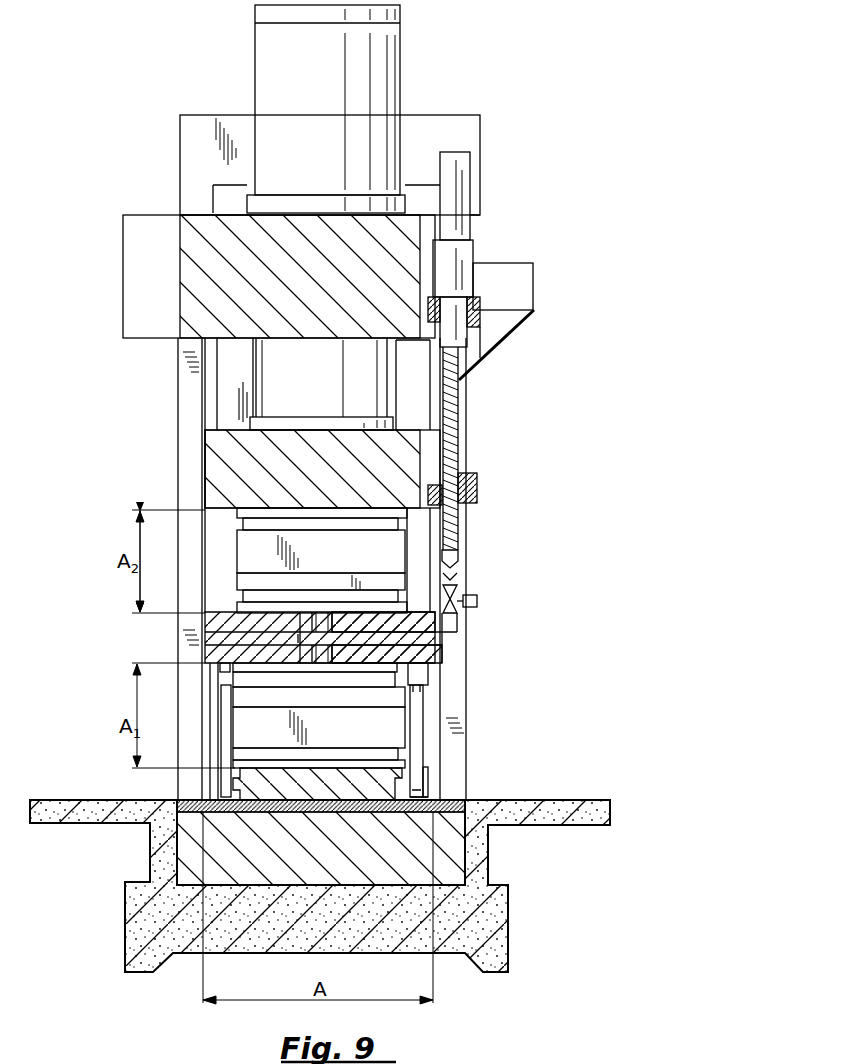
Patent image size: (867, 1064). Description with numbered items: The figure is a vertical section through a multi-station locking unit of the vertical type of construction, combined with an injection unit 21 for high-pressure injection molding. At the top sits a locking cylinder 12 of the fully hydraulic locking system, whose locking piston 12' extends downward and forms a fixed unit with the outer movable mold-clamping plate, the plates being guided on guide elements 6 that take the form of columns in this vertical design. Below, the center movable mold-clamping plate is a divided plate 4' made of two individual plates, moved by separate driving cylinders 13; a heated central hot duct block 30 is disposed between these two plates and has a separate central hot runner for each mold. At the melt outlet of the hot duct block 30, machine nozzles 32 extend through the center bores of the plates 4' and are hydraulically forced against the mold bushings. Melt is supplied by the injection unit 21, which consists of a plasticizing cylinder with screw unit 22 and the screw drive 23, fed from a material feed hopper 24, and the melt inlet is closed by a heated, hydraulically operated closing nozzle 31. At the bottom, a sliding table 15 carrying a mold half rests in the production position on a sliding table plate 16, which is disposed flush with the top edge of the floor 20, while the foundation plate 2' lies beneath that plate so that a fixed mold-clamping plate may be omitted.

The locking cylinder 12 is at (304, 100).
The locking piston 12' is at (307, 384).
The guide element 6 is at (243, 398).
The screw drive 23 is at (455, 165).
The injection unit 21 is at (460, 250).
The material feed hopper 24 is at (502, 327).
The screw unit 22 is at (460, 392).
The closing nozzle 31 is at (477, 598).
The central hot duct block 30 is at (453, 628).
The divided mold-clamping plate 4' is at (288, 637).
The machine nozzle 32 is at (323, 658).
The driving cylinder 13 is at (417, 700).
The sliding table 15 is at (367, 783).
The sliding table plate 16 is at (452, 800).
The floor 20 is at (72, 799).
The foundation plate 2' is at (359, 848).